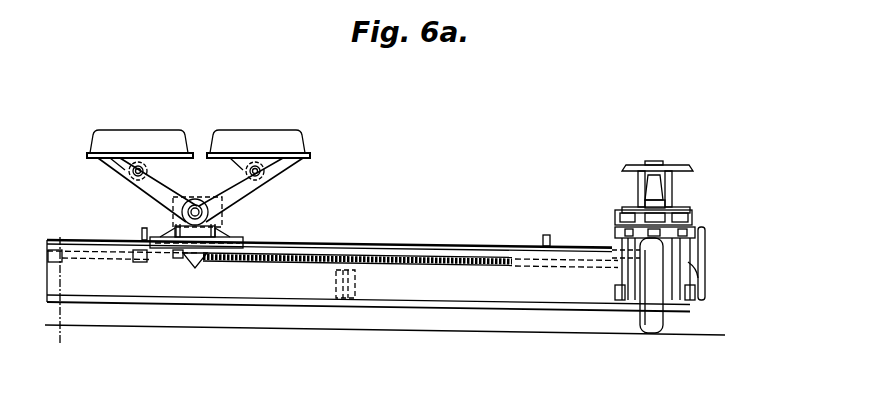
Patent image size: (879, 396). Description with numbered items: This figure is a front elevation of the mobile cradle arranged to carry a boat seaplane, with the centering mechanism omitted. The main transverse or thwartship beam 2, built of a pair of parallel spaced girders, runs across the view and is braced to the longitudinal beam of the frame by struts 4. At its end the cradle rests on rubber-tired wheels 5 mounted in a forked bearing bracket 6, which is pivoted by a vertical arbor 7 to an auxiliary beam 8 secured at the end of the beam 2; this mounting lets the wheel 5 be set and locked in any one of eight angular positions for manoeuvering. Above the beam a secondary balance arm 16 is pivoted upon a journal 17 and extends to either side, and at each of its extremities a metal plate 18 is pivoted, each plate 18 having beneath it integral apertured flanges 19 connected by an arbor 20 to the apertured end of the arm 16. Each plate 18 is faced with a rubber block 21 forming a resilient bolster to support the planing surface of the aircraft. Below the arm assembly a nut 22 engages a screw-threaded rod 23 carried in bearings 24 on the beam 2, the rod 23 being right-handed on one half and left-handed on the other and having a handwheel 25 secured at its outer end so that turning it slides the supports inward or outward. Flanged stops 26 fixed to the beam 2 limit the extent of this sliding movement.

The main transverse or thwartship beam 2 is at (287, 280).
The strut 4 is at (360, 296).
The rubber-tired wheel 5 is at (652, 322).
The forked bearing bracket 6 is at (620, 300).
The vertical arbor 7 is at (650, 162).
The auxiliary beam 8 is at (680, 166).
The secondary balance arm 16 is at (158, 189).
The journal 17 is at (210, 211).
The metal plate 18 is at (82, 165).
The apertured flange 19 is at (118, 162).
The arbor 20 is at (138, 166).
The rubber block 21 is at (169, 148).
The nut 22 is at (187, 260).
The screw-threaded rod 23 is at (495, 268).
The bearing 24 is at (136, 258).
The handwheel 25 is at (703, 226).
The flanged stop 26 is at (142, 236).